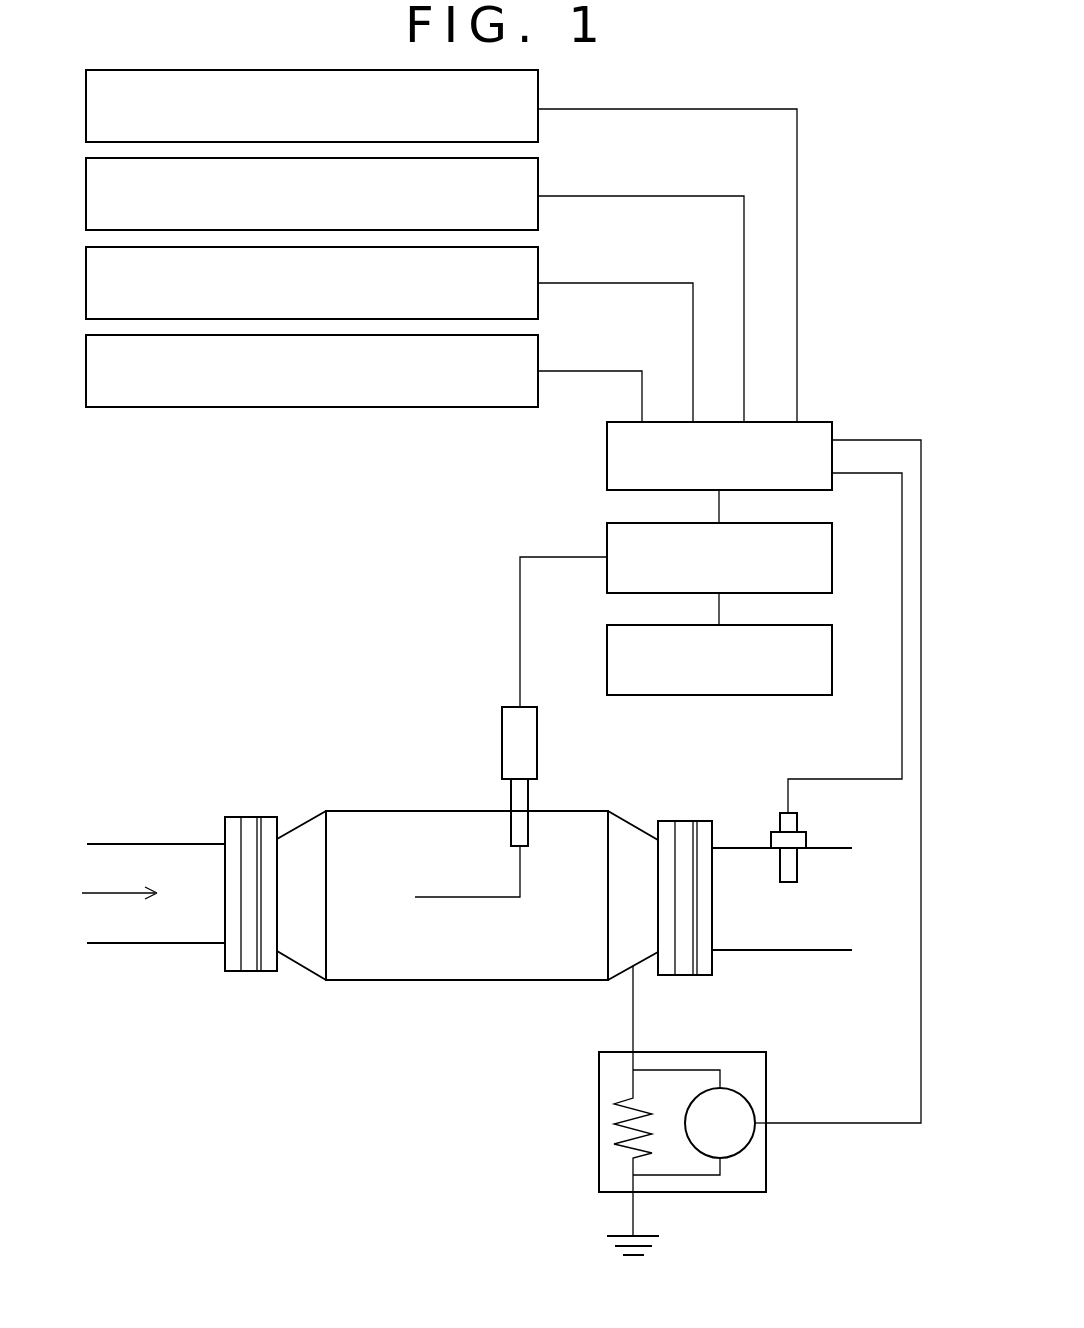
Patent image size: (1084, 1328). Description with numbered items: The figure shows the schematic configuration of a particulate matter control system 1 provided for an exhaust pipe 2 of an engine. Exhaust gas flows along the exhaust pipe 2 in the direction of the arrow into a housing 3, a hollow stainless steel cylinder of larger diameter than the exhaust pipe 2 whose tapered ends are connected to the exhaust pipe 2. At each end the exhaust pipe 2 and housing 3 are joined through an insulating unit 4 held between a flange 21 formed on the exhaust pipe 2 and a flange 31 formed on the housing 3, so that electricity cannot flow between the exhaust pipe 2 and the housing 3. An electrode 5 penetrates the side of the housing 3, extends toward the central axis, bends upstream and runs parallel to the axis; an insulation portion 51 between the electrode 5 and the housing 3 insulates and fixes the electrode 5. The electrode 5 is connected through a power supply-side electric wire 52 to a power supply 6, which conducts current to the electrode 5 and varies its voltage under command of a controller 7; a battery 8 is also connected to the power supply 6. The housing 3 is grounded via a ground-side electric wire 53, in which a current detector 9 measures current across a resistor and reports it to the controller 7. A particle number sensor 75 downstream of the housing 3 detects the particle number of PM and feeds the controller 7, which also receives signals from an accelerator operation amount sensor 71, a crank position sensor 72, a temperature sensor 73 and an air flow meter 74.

The particulate matter control system 1 is at (363, 698).
The exhaust pipe 2 is at (157, 844).
The housing 3 is at (362, 811).
The insulating unit 4 is at (253, 817).
The electrode 5 is at (481, 897).
The power supply 6 is at (832, 568).
The controller 7 is at (816, 422).
The battery 8 is at (832, 666).
The current detector 9 is at (599, 1172).
The flange 21 is at (232, 971).
The flange 31 is at (265, 971).
The insulation portion 51 is at (510, 793).
The power supply-side electric wire 52 is at (520, 637).
The ground-side electric wire 53 is at (633, 1018).
The accelerator operation amount sensor 71 is at (538, 92).
The crank position sensor 72 is at (538, 181).
The temperature sensor 73 is at (538, 263).
The air flow meter 74 is at (538, 352).
The particle number sensor 75 is at (800, 820).